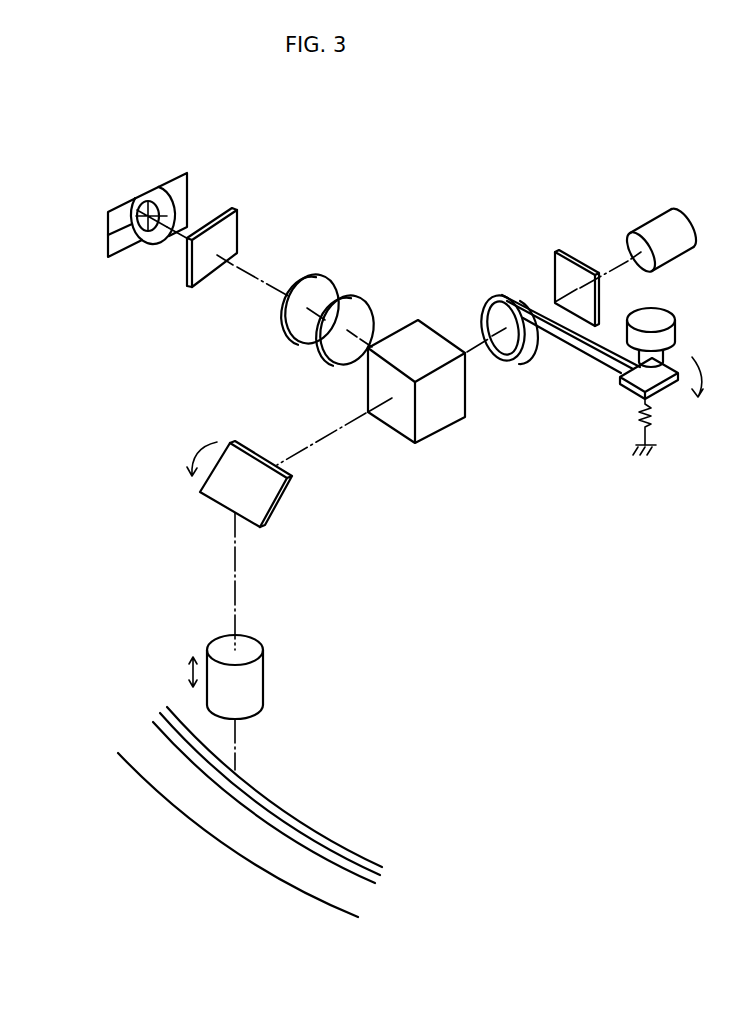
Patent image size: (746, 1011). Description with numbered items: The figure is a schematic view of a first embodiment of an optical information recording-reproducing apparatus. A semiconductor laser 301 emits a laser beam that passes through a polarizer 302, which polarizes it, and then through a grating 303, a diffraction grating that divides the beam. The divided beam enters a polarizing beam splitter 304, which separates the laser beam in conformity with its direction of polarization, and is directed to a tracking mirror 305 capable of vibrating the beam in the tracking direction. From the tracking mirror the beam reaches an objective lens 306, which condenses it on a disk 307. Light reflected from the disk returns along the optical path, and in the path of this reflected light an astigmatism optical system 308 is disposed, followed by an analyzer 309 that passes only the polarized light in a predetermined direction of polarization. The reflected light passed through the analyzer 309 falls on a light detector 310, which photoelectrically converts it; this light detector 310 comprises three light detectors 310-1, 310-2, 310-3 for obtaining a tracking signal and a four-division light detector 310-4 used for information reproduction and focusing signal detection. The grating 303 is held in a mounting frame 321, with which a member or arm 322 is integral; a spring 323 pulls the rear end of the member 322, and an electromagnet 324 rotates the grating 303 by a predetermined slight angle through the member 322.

The semiconductor laser 301 is at (670, 213).
The polarizer 302 is at (568, 248).
The grating 303 is at (497, 310).
The polarizing beam splitter 304 is at (445, 430).
The tracking mirror 305 is at (278, 502).
The objective lens 306 is at (265, 670).
The disk 307 is at (268, 790).
The astigmatism optical system 308 is at (321, 258).
The analyzer 309 is at (240, 228).
The light detector 310 is at (184, 159).
The light detector 310-1 is at (190, 190).
The light detector 310-2 is at (117, 255).
The light detector 310-3 is at (110, 217).
The four-division light detector 310-4 is at (143, 236).
The mounting frame 321 is at (515, 364).
The member (arm) 322 is at (573, 347).
The spring 323 is at (656, 417).
The electromagnet 324 is at (655, 307).